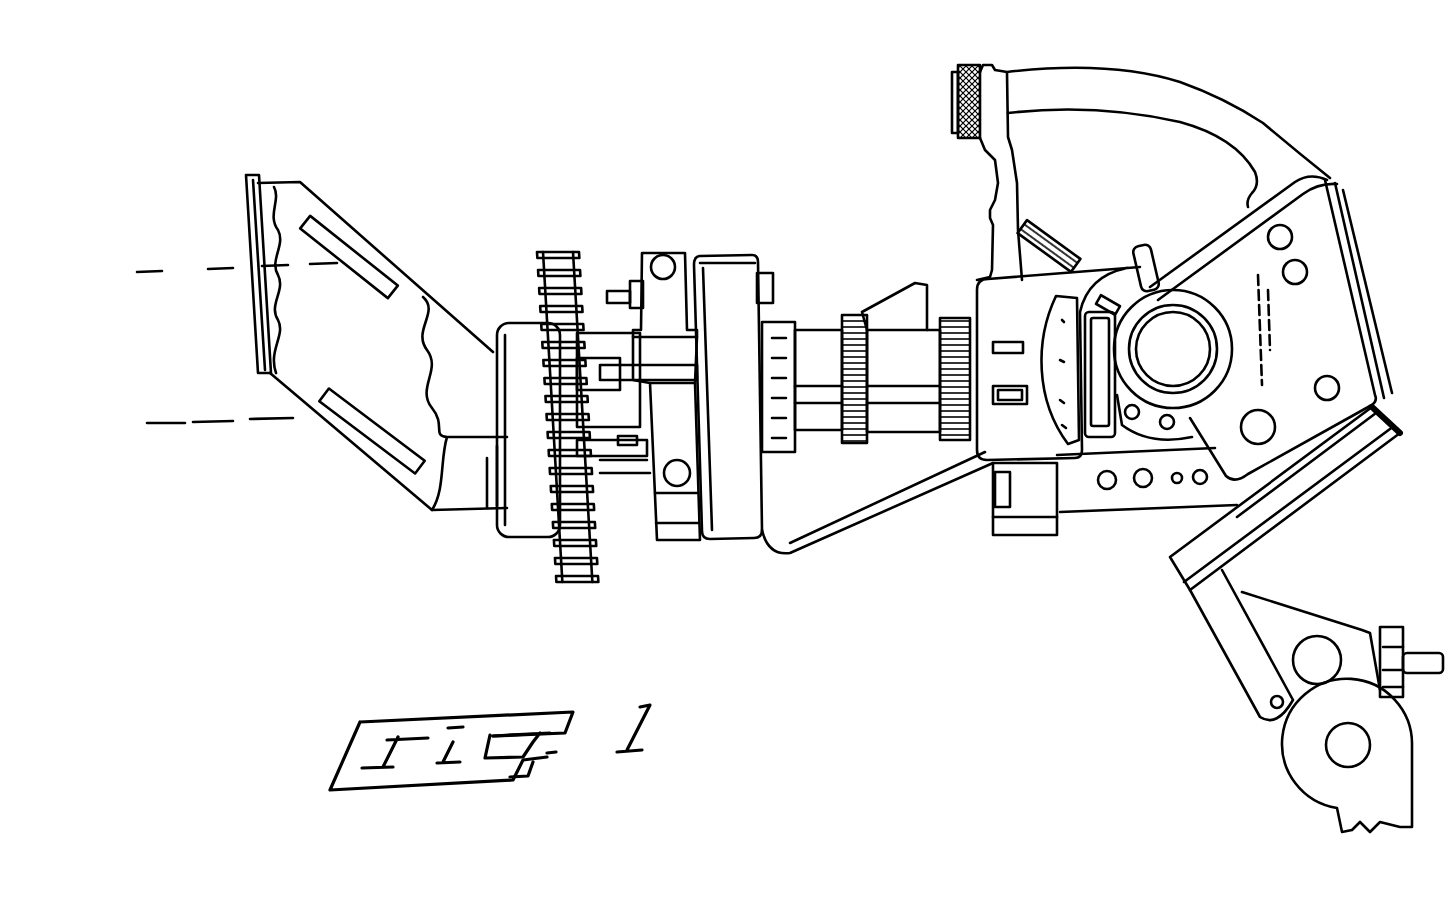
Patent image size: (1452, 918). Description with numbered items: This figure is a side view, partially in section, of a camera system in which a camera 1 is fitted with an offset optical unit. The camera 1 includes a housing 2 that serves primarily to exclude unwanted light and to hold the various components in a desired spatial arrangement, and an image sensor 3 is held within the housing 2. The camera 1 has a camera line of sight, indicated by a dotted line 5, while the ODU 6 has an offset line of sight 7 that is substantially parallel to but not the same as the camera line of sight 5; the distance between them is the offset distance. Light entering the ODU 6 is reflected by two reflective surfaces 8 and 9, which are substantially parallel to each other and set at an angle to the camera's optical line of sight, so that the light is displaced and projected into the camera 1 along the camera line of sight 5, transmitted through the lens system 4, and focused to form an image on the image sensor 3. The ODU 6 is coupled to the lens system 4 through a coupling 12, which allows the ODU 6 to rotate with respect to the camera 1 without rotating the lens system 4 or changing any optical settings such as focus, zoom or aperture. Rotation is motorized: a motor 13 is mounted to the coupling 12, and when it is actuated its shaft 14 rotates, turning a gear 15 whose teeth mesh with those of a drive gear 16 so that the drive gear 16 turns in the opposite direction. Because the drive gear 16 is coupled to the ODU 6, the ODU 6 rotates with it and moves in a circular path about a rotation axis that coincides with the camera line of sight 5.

The camera 1 is at (1298, 207).
The housing 2 is at (1183, 493).
The image sensor 3 is at (1062, 425).
The lens system 4 is at (893, 352).
The camera line of sight 5 is at (210, 423).
The ODU 6 is at (258, 330).
The offset line of sight 7 is at (185, 270).
The reflective surface 8 is at (343, 238).
The reflective surface 9 is at (388, 453).
The coupling 12 is at (640, 268).
The motor 13 is at (743, 510).
The shaft 14 is at (678, 350).
The gear 15 is at (620, 473).
The drive gear 16 is at (552, 252).